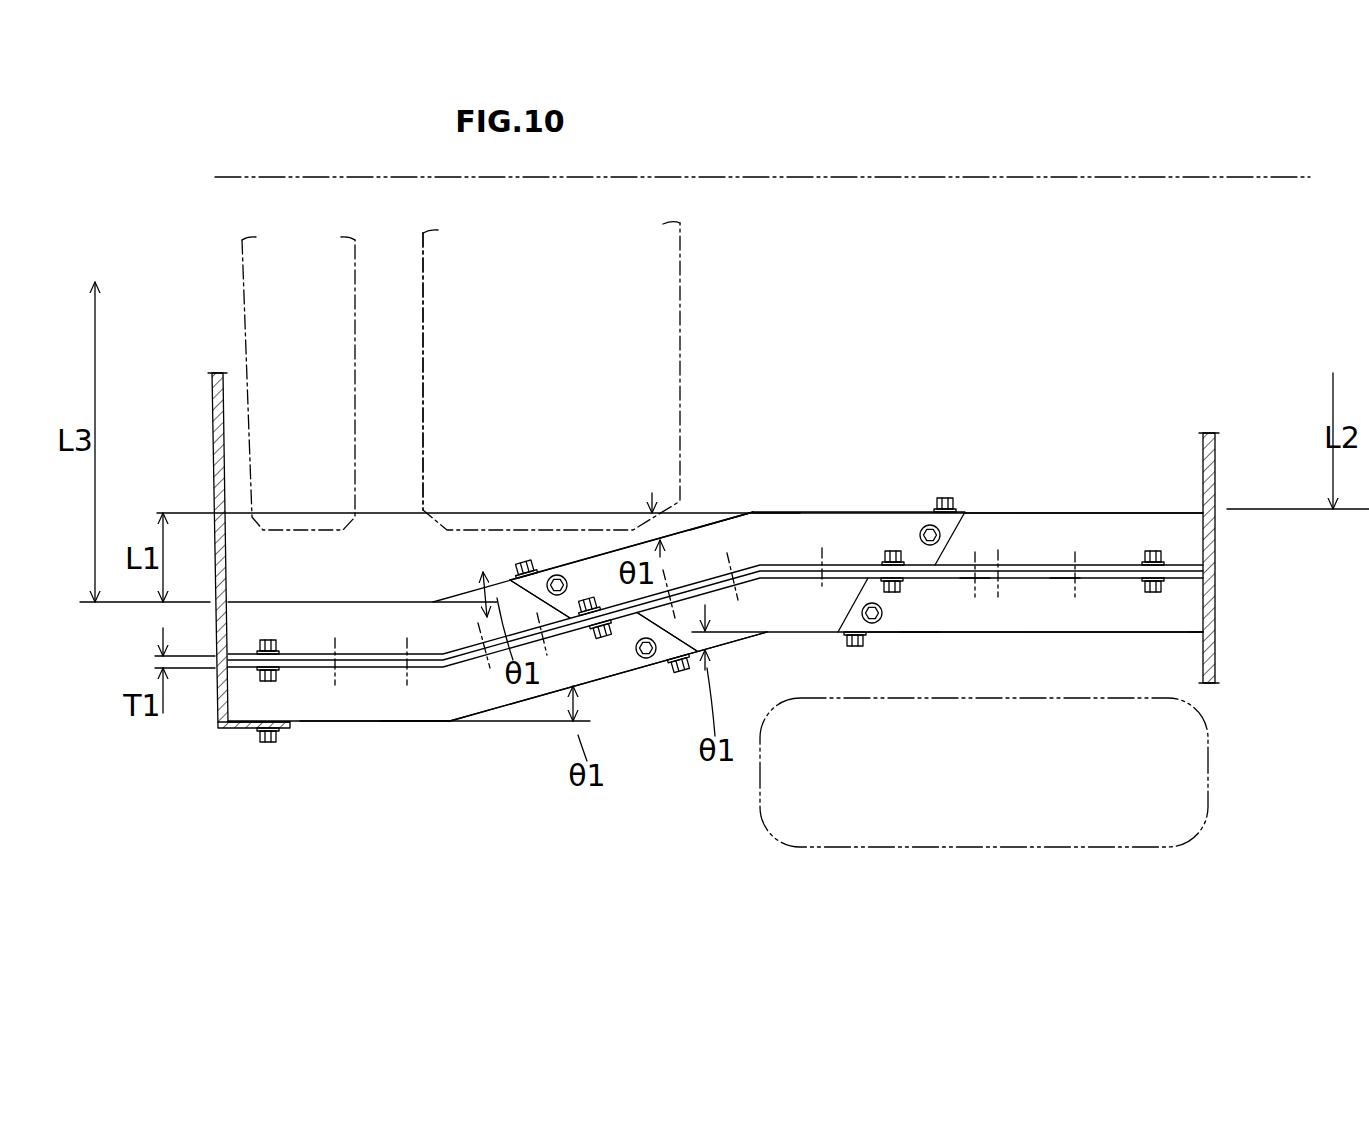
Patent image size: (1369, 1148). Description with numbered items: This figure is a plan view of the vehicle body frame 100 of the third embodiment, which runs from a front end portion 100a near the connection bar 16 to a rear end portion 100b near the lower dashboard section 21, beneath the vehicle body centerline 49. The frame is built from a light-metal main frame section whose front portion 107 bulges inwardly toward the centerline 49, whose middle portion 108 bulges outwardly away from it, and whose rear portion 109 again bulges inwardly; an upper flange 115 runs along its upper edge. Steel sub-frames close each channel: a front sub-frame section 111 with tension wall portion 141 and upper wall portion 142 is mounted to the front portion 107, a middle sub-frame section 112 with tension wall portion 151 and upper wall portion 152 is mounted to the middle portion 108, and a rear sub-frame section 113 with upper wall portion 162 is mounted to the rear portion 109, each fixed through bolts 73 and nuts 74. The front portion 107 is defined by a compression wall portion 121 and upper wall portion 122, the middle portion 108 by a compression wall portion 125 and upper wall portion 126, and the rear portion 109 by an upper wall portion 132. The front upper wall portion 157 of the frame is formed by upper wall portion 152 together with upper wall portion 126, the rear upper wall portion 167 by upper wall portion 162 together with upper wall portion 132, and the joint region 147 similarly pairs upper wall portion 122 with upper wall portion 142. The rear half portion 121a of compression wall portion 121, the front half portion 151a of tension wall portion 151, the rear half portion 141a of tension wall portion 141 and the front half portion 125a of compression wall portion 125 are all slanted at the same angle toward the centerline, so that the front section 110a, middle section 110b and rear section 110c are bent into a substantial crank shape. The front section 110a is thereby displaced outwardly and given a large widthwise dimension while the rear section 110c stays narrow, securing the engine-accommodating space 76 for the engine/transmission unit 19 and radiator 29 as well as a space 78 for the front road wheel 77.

The centerline of the vehicle body 49 is at (880, 177).
The radiator 29 is at (242, 285).
The engine/transmission unit 19 is at (680, 293).
The engine-accommodating space 76 is at (380, 525).
The connection bar 16 is at (213, 397).
The lower dashboard section 21 is at (1215, 445).
The vehicle body frame 100 is at (737, 587).
The front end portion 100a is at (243, 712).
The rear end portion 100b is at (1190, 605).
The compression wall portion 121 is at (290, 600).
The rear half portion 121a is at (485, 598).
The front portion 107 is at (353, 613).
The tension wall portion 151 is at (842, 512).
The front half portion 151a is at (597, 575).
The upper wall portion 152 is at (625, 560).
The upper wall portion 126 is at (718, 585).
The front upper wall portion 157 is at (730, 418).
The middle sub-frame section 112 is at (868, 508).
The upper flange 115 is at (795, 565).
The rear portion 109 is at (1063, 520).
The tension wall portion 141 is at (307, 723).
The rear half portion 141a is at (622, 674).
The compression wall portion 125 is at (793, 635).
The front half portion 125a is at (735, 620).
The middle portion 108 is at (830, 640).
The rear sub-frame section 113 is at (1123, 638).
The front sub-frame section 111 is at (500, 724).
The upper wall portion 122 is at (360, 645).
The upper wall portion 142 is at (410, 707).
The left joint 147 is at (443, 794).
The upper wall portion 132 is at (970, 598).
The upper wall portion 162 is at (1062, 605).
The rear upper wall portion 167 is at (1070, 759).
The space for accommodating the front road wheel 78 is at (917, 668).
The bolts 73 is at (520, 556).
The nuts 74 is at (264, 637).
The front road wheel 77 is at (1198, 795).
The front section 110a is at (225, 872).
The middle section 110b is at (747, 872).
The rear section 110c is at (758, 872).